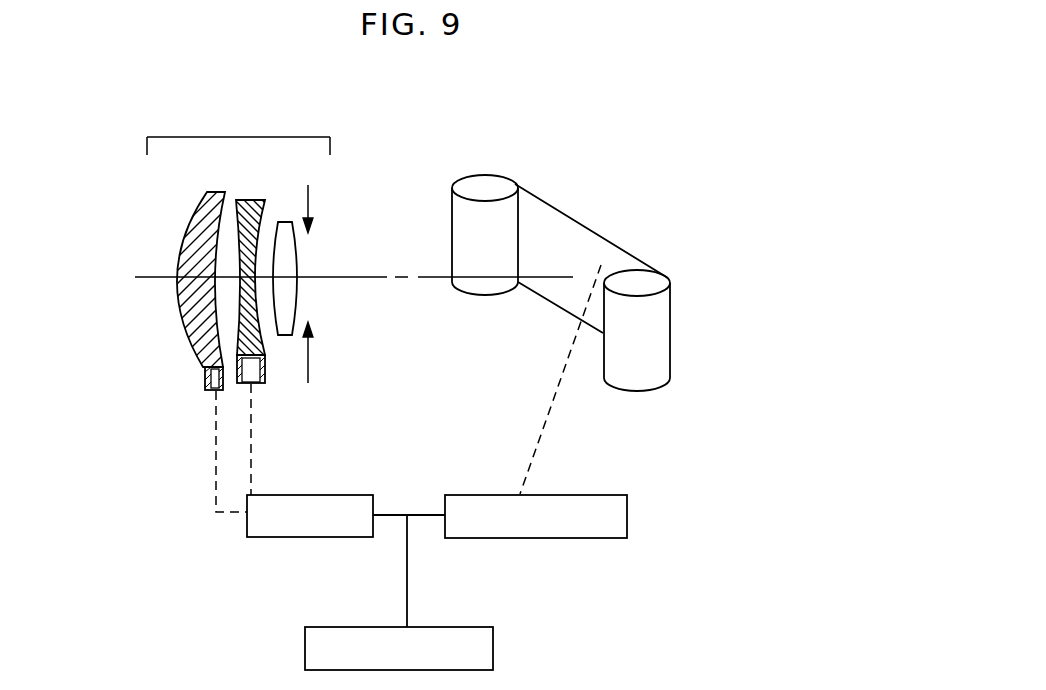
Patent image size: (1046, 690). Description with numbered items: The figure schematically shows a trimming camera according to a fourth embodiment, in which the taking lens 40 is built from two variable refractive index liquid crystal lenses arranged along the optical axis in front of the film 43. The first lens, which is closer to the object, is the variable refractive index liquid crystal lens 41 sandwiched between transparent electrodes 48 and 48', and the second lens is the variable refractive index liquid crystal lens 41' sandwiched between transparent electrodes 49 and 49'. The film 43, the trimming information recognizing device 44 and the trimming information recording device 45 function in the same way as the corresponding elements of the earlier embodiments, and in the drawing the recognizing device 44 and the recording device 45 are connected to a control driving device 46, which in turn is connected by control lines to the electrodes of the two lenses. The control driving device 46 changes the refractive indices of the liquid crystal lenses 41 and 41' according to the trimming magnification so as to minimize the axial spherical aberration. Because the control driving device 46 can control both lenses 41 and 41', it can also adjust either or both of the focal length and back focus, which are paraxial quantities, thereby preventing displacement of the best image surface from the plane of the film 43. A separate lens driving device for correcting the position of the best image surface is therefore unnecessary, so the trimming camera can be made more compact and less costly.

The taking lens 40 is at (235, 137).
The variable refractive index liquid crystal lens 41 is at (215, 280).
The variable refractive index liquid crystal lens 41' is at (252, 276).
The film 43 is at (480, 178).
The trimming information recognizing device 44 is at (493, 650).
The trimming information recording device 45 is at (582, 538).
The control driving device 46 is at (335, 495).
The transparent electrode 48 is at (179, 401).
The transparent electrode 48' is at (187, 426).
The transparent electrode 49 is at (272, 403).
The transparent electrode 49' is at (299, 386).